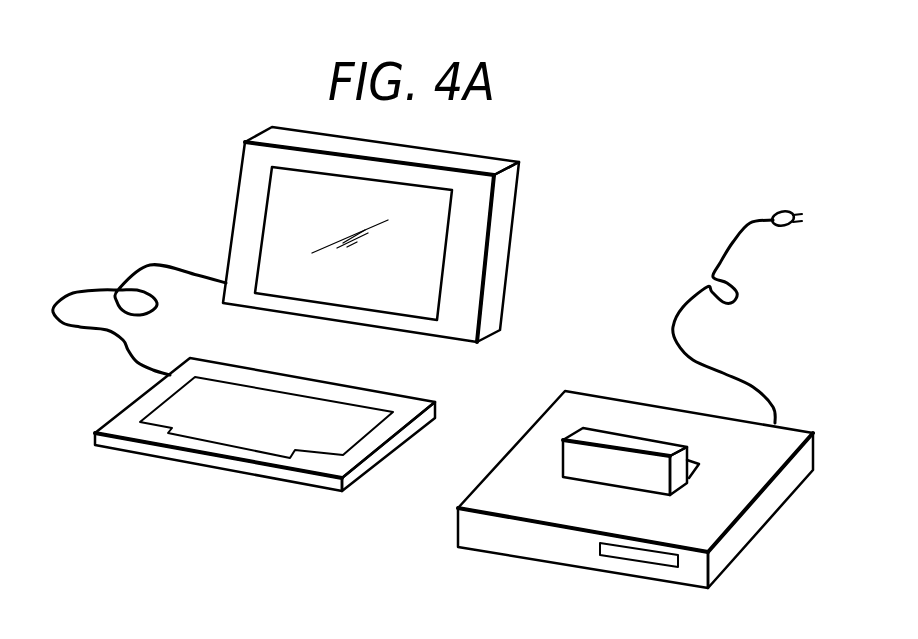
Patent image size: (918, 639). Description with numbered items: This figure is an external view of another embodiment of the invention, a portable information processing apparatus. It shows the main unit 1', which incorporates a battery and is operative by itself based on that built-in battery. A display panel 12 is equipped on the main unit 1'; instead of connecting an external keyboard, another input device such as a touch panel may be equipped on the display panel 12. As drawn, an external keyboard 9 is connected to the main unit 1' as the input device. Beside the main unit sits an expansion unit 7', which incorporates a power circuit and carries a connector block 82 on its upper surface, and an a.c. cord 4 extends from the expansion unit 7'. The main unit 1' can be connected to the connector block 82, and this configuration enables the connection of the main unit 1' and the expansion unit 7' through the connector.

The main unit 1' is at (396, 231).
The display panel 12 is at (430, 247).
The external keyboard 9 is at (400, 402).
The expansion unit 7' is at (635, 460).
The connector block 82 is at (638, 445).
The a.c. cord 4 is at (733, 242).